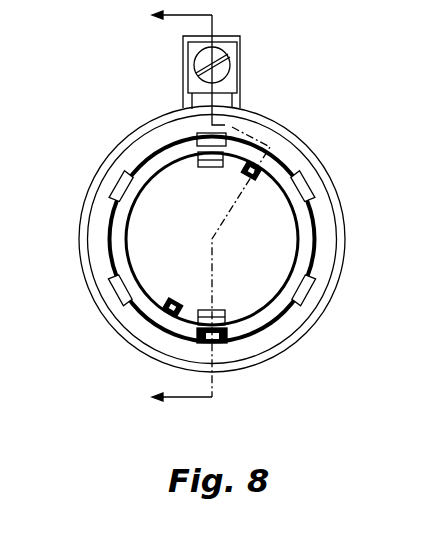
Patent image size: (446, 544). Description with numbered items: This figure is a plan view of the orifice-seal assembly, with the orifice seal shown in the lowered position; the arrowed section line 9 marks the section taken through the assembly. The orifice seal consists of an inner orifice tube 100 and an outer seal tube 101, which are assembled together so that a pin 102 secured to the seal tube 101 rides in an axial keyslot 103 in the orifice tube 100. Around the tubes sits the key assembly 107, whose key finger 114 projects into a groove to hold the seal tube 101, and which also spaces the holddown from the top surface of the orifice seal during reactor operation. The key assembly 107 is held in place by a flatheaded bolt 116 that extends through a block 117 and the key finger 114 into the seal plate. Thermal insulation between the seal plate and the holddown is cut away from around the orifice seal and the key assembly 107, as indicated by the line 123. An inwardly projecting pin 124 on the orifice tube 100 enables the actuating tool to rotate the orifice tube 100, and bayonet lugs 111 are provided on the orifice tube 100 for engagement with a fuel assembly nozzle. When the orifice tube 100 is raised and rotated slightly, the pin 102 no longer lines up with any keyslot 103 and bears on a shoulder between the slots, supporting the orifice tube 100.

The section line 9- 9 is at (200, 208).
The orifice tube 100 is at (315, 237).
The seal tube 101 is at (318, 165).
The pin 102 is at (196, 338).
The keyslot 103 is at (295, 288).
The key assembly 107 is at (188, 78).
The bayonet lugs 111 is at (208, 167).
The key finger 114 is at (233, 105).
The flatheaded bolt 116 is at (227, 53).
The block 117 is at (240, 80).
The line 123 is at (307, 330).
The inwardly projecting pin 124 is at (257, 180).